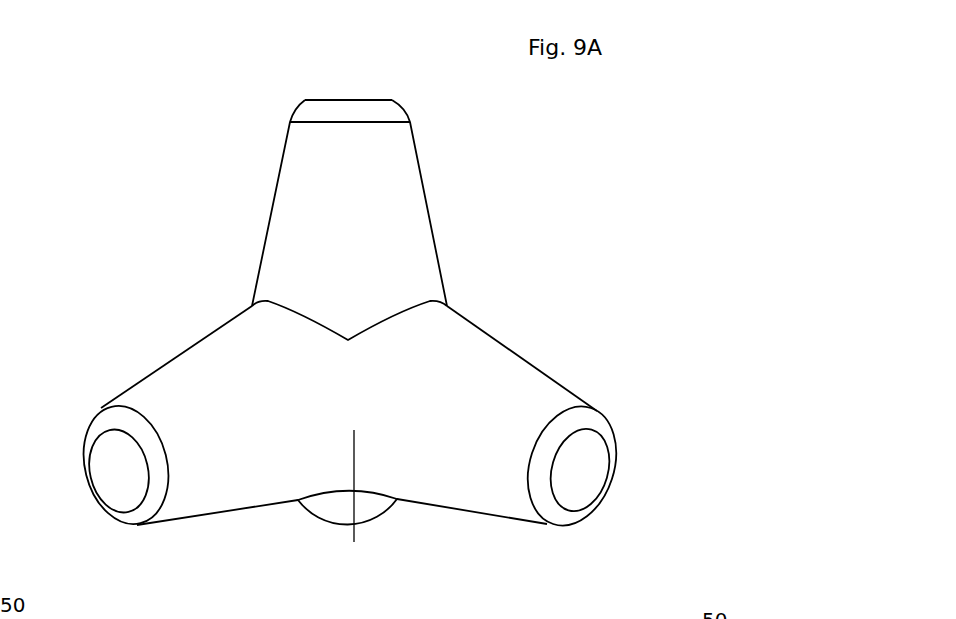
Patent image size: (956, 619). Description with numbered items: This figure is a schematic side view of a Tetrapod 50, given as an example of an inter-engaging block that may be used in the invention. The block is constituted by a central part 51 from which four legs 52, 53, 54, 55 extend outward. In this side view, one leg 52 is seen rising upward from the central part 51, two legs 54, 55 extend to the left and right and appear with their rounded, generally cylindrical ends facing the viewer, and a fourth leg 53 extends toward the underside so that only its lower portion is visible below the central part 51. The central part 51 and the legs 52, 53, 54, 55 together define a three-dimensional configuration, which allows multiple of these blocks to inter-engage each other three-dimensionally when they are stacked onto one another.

The Tetrapod 50 is at (127, 247).
The central part 51 is at (354, 542).
The leg 52 is at (373, 209).
The leg 53 is at (333, 508).
The leg 54 is at (145, 402).
The leg 55 is at (505, 370).